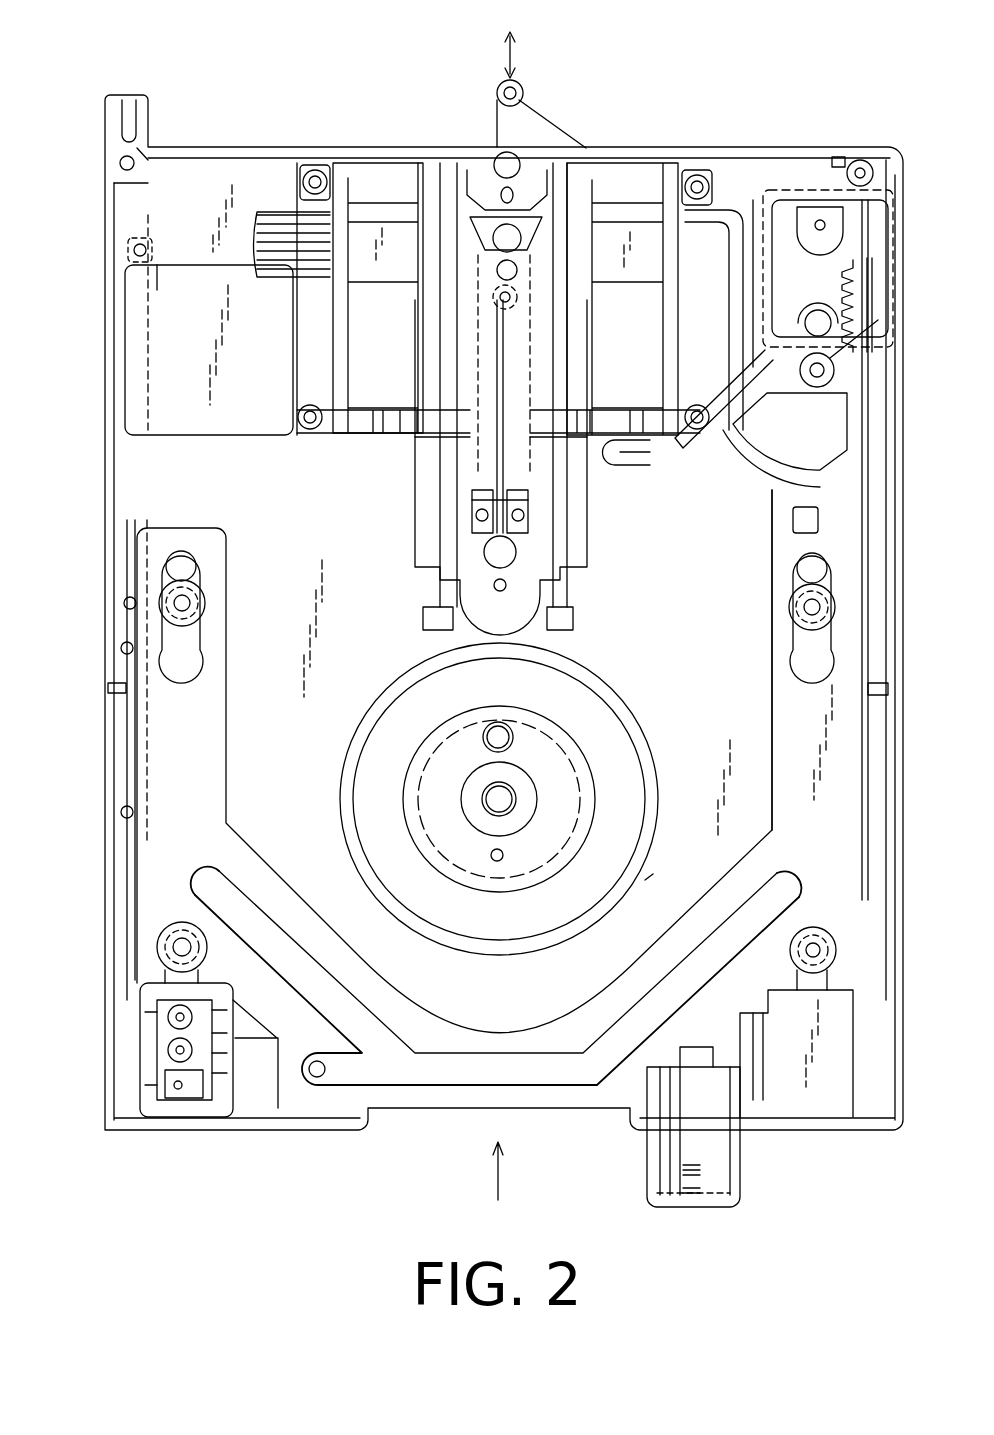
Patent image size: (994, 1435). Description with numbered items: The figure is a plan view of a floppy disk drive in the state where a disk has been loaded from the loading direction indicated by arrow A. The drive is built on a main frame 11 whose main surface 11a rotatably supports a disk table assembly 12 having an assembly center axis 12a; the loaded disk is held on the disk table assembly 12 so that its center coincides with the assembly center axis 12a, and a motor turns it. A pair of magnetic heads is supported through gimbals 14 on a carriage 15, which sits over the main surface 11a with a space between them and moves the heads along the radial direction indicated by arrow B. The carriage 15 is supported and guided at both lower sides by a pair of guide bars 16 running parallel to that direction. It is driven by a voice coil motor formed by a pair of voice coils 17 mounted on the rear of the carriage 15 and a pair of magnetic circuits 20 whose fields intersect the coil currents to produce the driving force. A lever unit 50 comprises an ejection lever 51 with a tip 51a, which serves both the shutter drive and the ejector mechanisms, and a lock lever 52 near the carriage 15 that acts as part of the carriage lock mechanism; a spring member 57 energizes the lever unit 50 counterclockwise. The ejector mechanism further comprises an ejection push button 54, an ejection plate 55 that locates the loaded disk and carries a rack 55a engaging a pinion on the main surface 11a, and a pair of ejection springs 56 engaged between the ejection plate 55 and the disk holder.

The main frame 11 is at (272, 1130).
The main surface 11a is at (302, 742).
The disk table assembly 12 is at (578, 757).
The assembly center axis 12a is at (497, 795).
The gimbals 14 is at (545, 545).
The carriage 15 is at (535, 478).
The guide bars 16 is at (423, 525).
The voice coils 17 is at (380, 283).
The magnetic circuits 20 is at (357, 436).
The lever unit 50 is at (710, 390).
The ejection lever 51 is at (745, 470).
The tip 51a is at (655, 458).
The lock lever 52 is at (716, 212).
The ejection push button 54 is at (716, 1208).
The ejection plate 55 is at (780, 712).
The rack 55a is at (850, 255).
The ejection springs 56 is at (120, 688).
The spring member 57 is at (796, 380).
The loading direction A is at (494, 1190).
The predetermined radial direction B is at (505, 52).